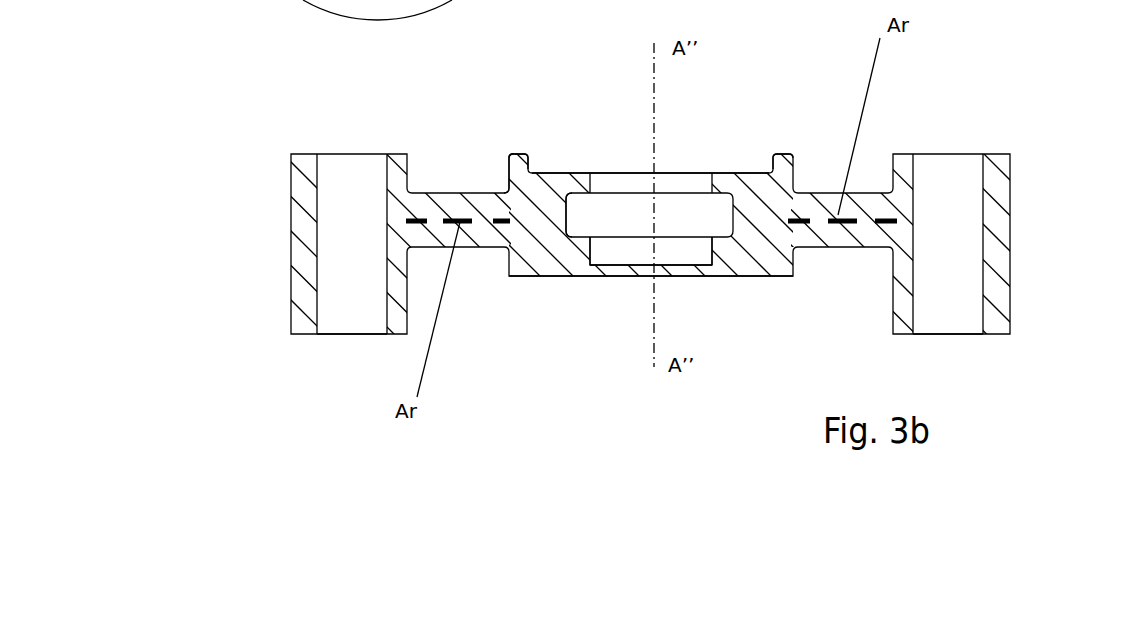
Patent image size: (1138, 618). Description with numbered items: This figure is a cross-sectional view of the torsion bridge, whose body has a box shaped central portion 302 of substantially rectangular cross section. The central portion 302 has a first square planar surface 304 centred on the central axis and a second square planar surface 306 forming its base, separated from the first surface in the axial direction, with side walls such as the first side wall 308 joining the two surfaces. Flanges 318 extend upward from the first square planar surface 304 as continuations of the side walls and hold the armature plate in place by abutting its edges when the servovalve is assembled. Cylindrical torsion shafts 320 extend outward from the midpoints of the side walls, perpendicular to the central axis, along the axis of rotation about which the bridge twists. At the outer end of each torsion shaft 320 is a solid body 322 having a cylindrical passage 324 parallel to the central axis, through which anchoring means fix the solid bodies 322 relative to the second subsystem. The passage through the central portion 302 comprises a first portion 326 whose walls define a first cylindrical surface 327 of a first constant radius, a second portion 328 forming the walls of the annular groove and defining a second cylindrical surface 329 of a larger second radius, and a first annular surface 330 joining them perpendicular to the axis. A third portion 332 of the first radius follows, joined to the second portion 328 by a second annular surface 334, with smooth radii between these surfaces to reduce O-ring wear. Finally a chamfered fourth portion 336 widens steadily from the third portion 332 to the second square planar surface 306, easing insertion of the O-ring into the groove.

The box shaped central portion 302 is at (738, 98).
The first square planar surface 304 is at (565, 173).
The second square planar surface 306 is at (747, 273).
The first side wall 308 is at (510, 172).
The flanges 318 is at (526, 158).
The cylindrical torsion shafts 320 is at (485, 240).
The solid bodies 322 is at (292, 237).
The cylindrical passage 324 is at (363, 328).
The first portion 326 is at (605, 183).
The first cylindrical surface 327 is at (722, 193).
The second portion 328 is at (576, 210).
The second cylindrical surface 329 is at (578, 208).
The first annular surface 330 is at (720, 195).
The third portion 332 is at (700, 245).
The second annular surface 334 is at (721, 239).
The fourth portion 336 is at (605, 268).